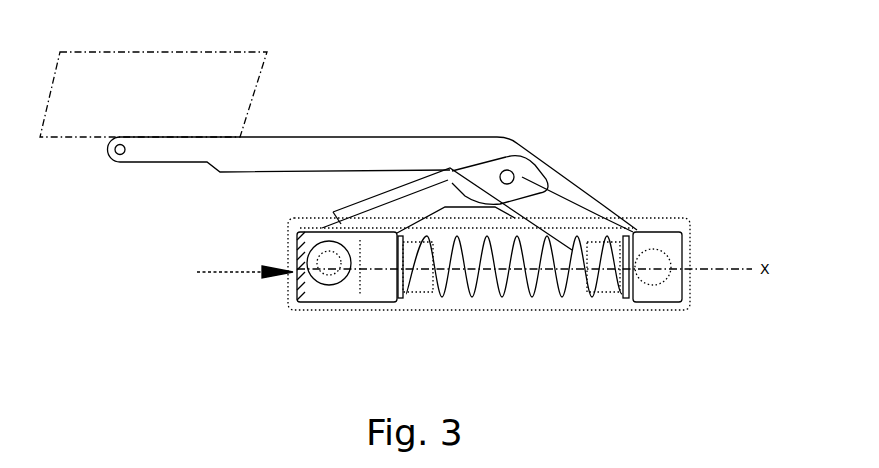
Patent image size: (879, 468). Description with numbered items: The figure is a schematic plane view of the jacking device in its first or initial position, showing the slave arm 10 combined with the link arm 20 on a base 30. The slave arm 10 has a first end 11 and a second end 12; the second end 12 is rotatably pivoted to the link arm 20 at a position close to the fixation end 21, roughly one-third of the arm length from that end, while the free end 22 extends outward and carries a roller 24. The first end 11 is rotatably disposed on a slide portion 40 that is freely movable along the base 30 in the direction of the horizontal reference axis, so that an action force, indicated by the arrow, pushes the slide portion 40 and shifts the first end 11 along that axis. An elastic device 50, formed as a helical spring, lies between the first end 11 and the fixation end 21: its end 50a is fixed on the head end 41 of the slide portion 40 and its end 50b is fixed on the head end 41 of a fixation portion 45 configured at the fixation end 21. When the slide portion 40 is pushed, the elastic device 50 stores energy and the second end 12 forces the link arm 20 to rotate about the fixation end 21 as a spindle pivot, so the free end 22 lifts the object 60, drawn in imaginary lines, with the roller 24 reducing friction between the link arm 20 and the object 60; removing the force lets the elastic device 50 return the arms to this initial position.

The slave arm 10 is at (447, 190).
The first end 11 is at (313, 303).
The second end 12 is at (552, 168).
The link arm 20 is at (418, 165).
The fixation end 21 is at (688, 245).
The free end 22 is at (287, 137).
The roller 24 is at (122, 165).
The base 30 is at (663, 307).
The slide portion 40 is at (372, 303).
The head end 41 is at (432, 305).
The fixation portion 45 is at (685, 288).
The elastic device 50 is at (534, 303).
The end of elastic device 50a is at (413, 305).
The end of elastic device 50b is at (624, 303).
The object 60 is at (165, 62).